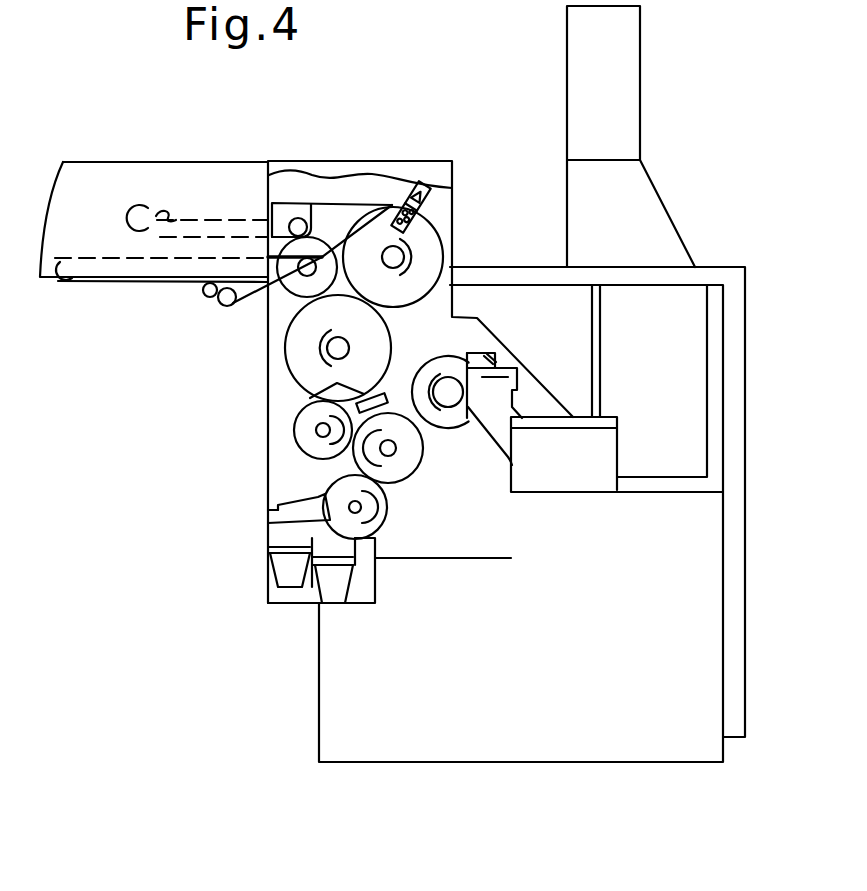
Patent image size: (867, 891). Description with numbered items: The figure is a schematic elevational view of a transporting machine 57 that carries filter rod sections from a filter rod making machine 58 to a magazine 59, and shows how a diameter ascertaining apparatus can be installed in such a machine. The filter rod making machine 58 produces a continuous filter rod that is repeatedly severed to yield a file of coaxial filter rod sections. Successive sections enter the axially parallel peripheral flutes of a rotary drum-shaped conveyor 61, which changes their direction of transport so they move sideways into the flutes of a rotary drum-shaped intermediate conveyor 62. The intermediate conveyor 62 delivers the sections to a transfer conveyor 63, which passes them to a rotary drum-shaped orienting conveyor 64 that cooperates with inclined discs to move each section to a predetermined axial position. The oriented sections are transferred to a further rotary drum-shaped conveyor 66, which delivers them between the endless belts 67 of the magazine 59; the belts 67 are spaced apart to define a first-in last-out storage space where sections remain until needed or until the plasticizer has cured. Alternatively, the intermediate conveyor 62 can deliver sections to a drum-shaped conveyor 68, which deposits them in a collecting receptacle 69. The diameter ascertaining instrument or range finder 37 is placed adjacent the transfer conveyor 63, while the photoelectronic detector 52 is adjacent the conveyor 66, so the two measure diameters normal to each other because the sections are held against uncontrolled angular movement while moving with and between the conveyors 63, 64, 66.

The diameter ascertaining instrument 37 is at (320, 390).
The photoelectronic detector 52 is at (407, 200).
The transporting machine 57 is at (245, 690).
The filter rod making machine 58 is at (715, 148).
The magazine 59 is at (93, 173).
The rotary drum-shaped conveyor 61 is at (457, 425).
The intermediate conveyor 62 is at (405, 480).
The transfer conveyor 63 is at (307, 447).
The orienting conveyor 64 is at (297, 352).
The rotary drum-shaped conveyor 66 is at (423, 263).
The endless belts 67 is at (287, 270).
The drum-shaped conveyor 68 is at (343, 518).
The collecting receptacle 69 is at (328, 583).